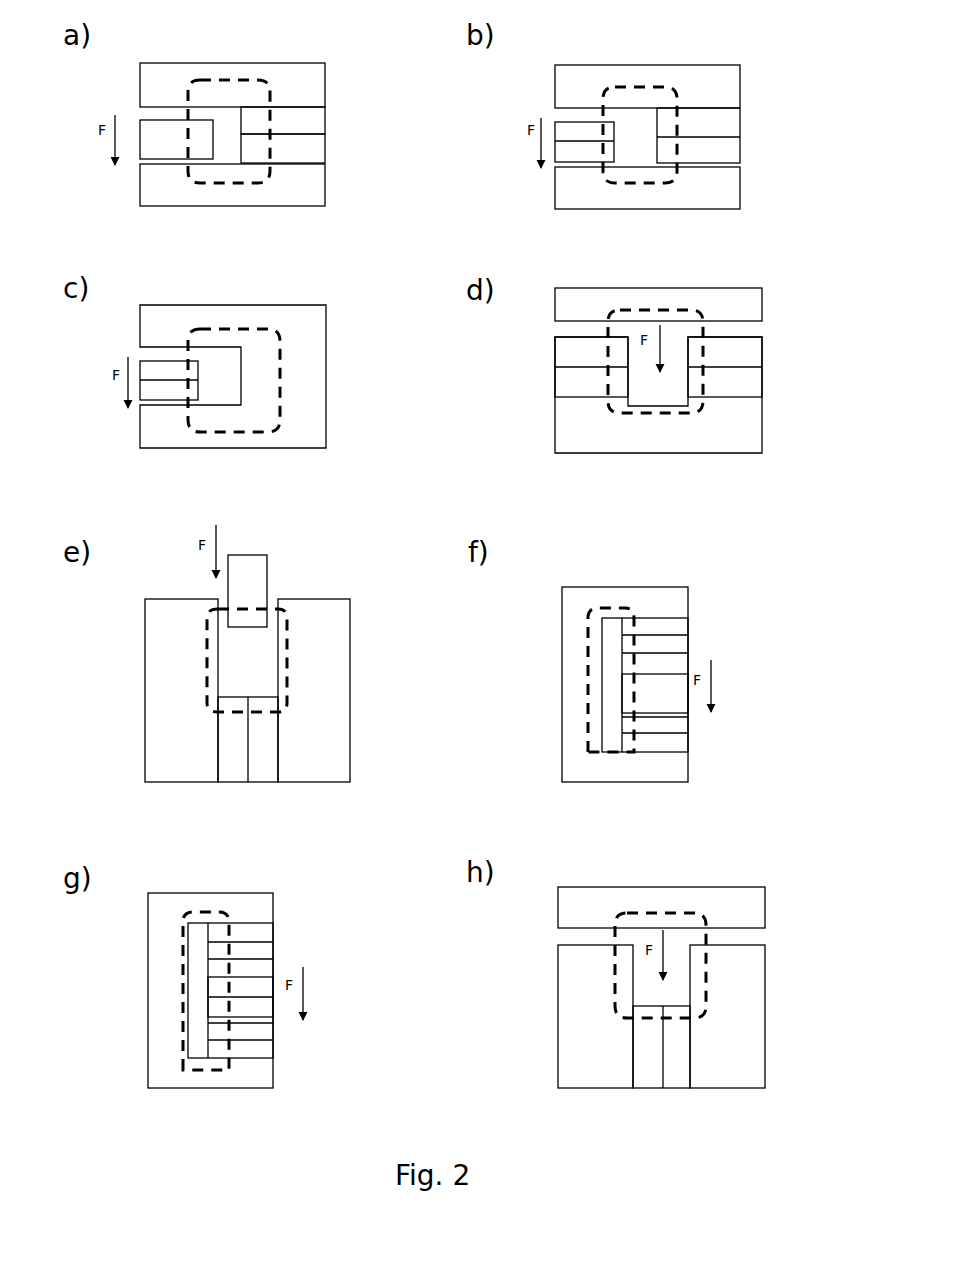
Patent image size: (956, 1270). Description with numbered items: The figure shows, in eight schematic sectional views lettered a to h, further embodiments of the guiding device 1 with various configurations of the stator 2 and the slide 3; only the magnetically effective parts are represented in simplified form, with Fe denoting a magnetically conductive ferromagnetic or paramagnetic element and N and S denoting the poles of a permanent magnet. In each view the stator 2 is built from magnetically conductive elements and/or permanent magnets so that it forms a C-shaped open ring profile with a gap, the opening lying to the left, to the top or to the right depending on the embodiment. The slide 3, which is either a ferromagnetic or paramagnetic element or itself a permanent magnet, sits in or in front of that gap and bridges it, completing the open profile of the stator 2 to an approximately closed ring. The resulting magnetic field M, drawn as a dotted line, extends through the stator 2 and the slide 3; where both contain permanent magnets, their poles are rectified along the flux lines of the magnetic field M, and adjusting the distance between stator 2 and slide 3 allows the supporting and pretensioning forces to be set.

The guiding device 1 is at (120, 82).
The stator 2 is at (207, 33).
The slide 3 is at (142, 143).
The magnetic field M is at (232, 78).